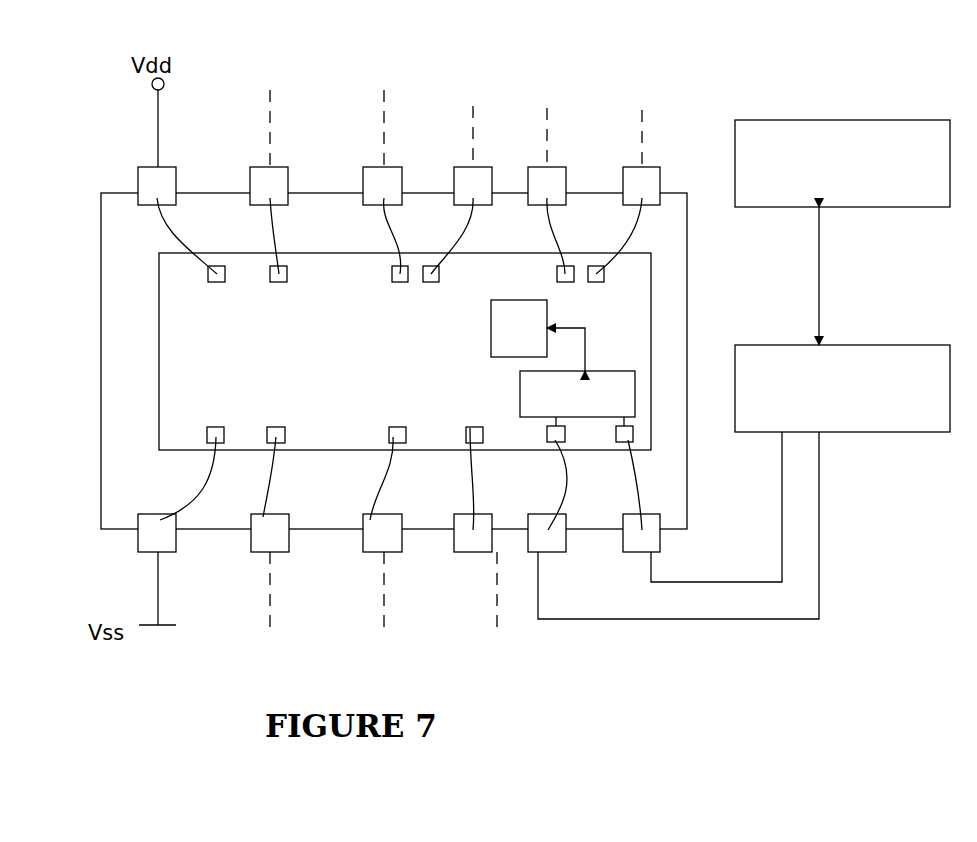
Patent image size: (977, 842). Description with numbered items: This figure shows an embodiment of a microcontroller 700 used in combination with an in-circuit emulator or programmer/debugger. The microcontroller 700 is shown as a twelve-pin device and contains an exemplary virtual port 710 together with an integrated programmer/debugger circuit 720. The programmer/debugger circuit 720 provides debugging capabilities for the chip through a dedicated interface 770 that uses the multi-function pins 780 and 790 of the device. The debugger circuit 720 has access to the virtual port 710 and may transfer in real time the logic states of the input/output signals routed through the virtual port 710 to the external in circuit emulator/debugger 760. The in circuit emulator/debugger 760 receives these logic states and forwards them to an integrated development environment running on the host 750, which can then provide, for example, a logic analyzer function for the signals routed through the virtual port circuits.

The microcontroller 700 is at (683, 303).
The virtual port 710 is at (519, 328).
The programmer/debugger circuit 720 is at (605, 378).
The host 750 is at (931, 132).
The in circuit emulator/debugger 760 is at (898, 350).
The dedicated interface 770 is at (858, 562).
The multi-function pin 780 is at (650, 539).
The multi-function pin 790 is at (547, 553).